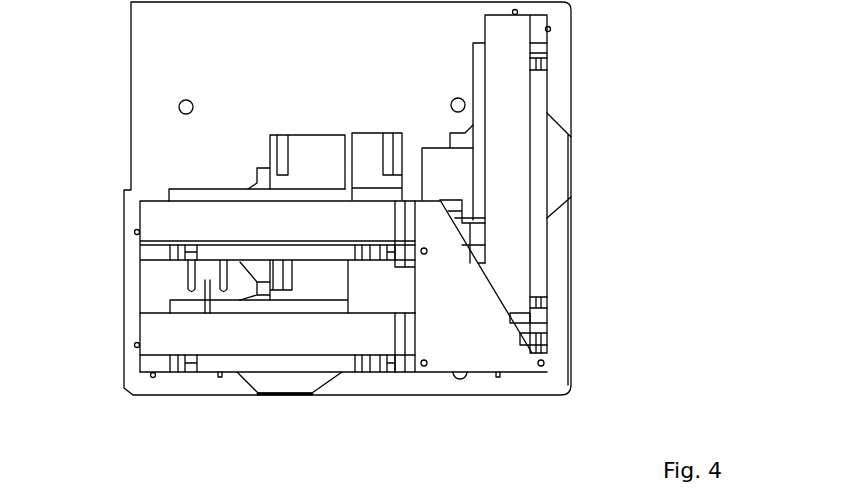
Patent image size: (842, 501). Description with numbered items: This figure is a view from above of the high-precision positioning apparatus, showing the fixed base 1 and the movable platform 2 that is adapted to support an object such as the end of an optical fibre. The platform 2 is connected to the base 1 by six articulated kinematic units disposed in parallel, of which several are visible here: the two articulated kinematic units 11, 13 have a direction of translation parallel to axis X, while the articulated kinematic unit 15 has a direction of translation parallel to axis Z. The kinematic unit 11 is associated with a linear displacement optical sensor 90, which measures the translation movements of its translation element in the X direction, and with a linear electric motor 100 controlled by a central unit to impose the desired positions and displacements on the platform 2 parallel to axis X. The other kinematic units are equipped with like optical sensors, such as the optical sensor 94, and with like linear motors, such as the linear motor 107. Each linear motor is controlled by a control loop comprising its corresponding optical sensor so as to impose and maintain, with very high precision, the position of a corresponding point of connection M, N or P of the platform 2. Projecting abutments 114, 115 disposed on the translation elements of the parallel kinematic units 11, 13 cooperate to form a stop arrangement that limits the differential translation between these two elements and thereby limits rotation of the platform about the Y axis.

The fixed base 1 is at (157, 63).
The movable platform 2 is at (475, 365).
The articulated kinematic unit 11 is at (131, 346).
The articulated kinematic unit 13 is at (131, 233).
The articulated kinematic unit 15 is at (557, 114).
The linear displacement optical sensor 90 is at (307, 288).
The optical sensor 94 is at (302, 145).
The linear electric motor 100 is at (253, 378).
The linear motor 107 is at (558, 170).
The projecting abutment 114 is at (205, 300).
The projecting abutment 115 is at (220, 272).
The point of connection M is at (424, 366).
The point of connection N is at (427, 251).
The point of connection P is at (544, 363).